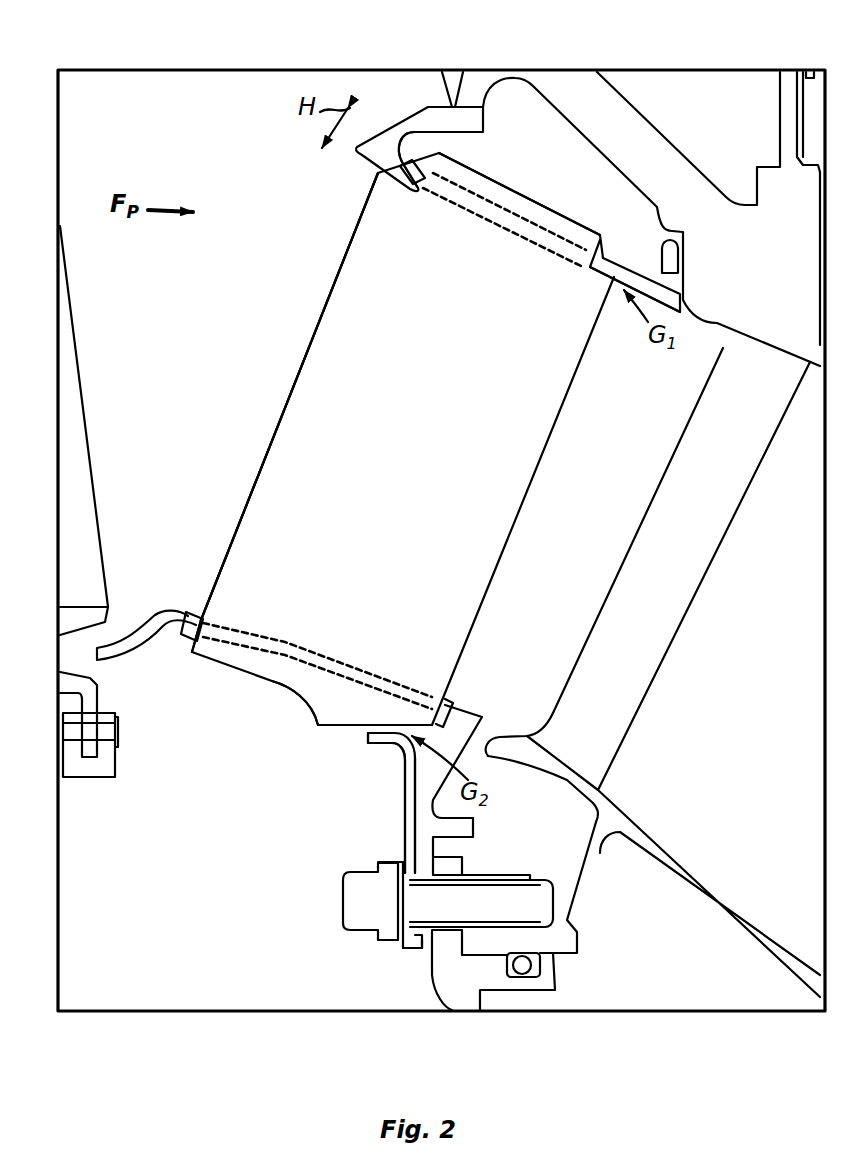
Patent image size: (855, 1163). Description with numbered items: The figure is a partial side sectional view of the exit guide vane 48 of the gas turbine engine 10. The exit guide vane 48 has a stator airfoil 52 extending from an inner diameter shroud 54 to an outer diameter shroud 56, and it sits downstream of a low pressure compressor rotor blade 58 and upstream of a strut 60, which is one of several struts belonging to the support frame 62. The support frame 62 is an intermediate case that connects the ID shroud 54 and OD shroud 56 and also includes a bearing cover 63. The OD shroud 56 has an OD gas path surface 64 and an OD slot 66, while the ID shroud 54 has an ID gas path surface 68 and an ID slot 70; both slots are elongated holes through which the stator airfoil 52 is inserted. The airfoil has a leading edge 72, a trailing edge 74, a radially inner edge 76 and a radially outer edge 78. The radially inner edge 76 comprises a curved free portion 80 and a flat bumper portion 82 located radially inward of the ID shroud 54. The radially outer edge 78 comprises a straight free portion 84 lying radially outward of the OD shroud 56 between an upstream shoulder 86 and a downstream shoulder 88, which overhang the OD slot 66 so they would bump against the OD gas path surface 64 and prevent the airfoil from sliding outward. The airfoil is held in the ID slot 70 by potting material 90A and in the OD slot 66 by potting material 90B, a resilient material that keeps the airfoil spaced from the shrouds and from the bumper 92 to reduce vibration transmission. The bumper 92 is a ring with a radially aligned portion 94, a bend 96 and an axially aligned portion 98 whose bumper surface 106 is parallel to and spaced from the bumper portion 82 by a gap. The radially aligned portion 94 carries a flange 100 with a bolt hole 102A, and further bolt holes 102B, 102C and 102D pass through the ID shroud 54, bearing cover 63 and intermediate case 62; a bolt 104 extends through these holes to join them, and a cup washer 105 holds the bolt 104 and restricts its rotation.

The gas turbine engine 10 is at (75, 60).
The exit guide vane (EGV) 48 is at (268, 320).
The stator airfoil 52 is at (283, 402).
The inner diameter (ID) shroud 54 is at (155, 610).
The outer diameter (OD) shroud 56 is at (353, 152).
The low pressure compressor rotor blade 58 is at (77, 383).
The strut 60 is at (650, 630).
The support frame (intermediate case) 62 is at (610, 848).
The bearing cover 63 is at (537, 980).
The OD gas path surface 64 is at (372, 173).
The OD slot 66 is at (505, 228).
The ID gas path surface 68 is at (185, 611).
The ID slot 70 is at (317, 641).
The leading edge 72 is at (262, 468).
The trailing edge 74 is at (527, 498).
The radially inner edge 76 is at (253, 680).
The radially outer edge 78 is at (517, 190).
The free portion 80 is at (211, 663).
The bumper portion 82 is at (330, 730).
The free portion 84 is at (560, 212).
The upstream shoulder 86 is at (393, 188).
The downstream shoulder 88 is at (600, 285).
The potting material 90A is at (440, 702).
The potting material 90B is at (594, 262).
The bumper 92 is at (403, 814).
The radially aligned portion 94 is at (403, 845).
The bend 96 is at (396, 757).
The axially aligned portion 98 is at (366, 745).
The flange 100 is at (408, 948).
The bolt hole 102A is at (474, 834).
The bolt hole 102B is at (449, 876).
The bolt hole 102C is at (432, 963).
The bolt hole 102D is at (560, 957).
The bolt 104 is at (343, 898).
The cup washer 105 is at (385, 850).
The bumper surface 106 is at (377, 732).